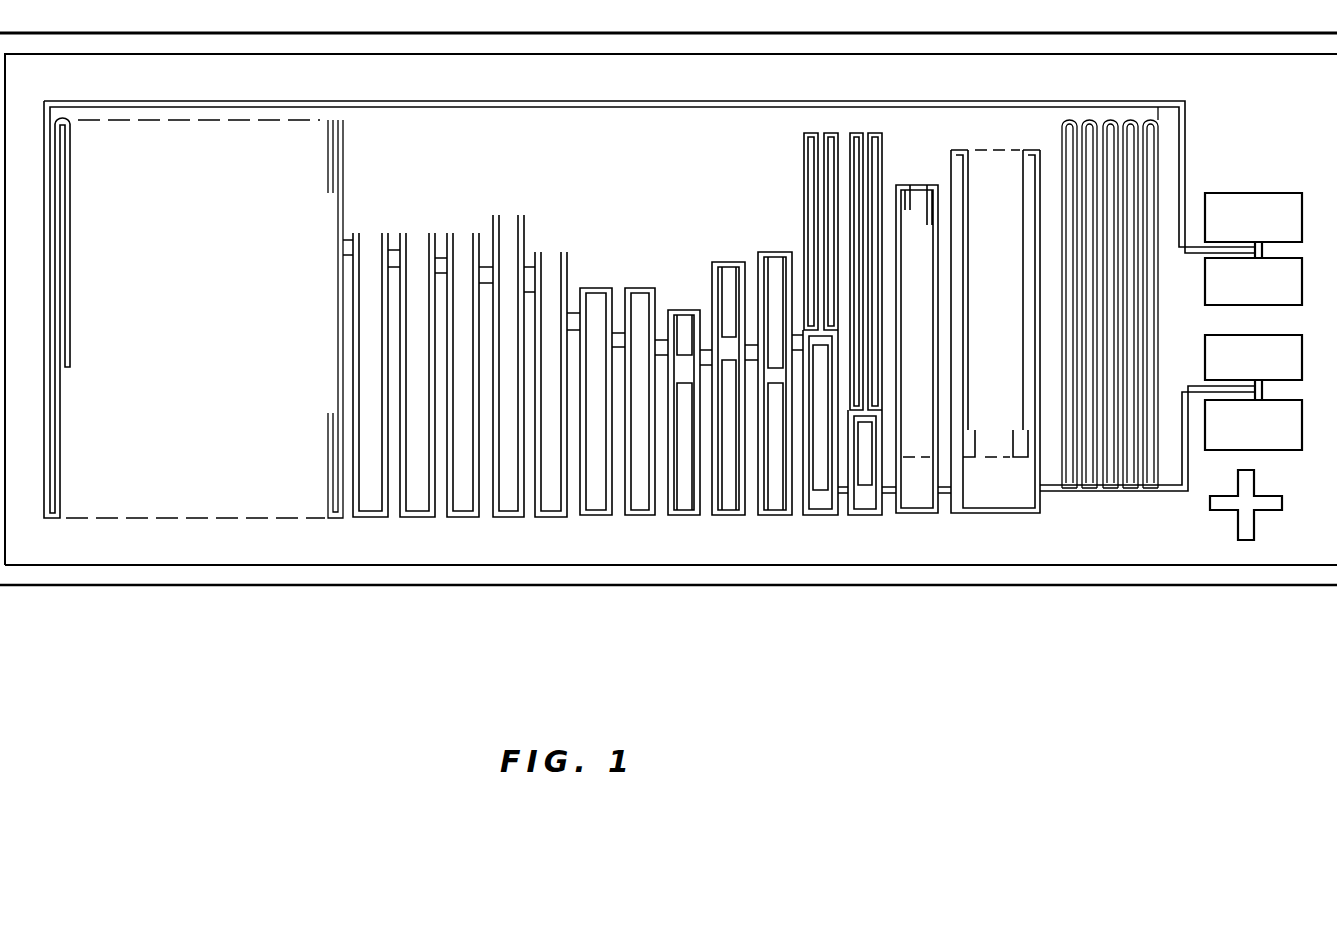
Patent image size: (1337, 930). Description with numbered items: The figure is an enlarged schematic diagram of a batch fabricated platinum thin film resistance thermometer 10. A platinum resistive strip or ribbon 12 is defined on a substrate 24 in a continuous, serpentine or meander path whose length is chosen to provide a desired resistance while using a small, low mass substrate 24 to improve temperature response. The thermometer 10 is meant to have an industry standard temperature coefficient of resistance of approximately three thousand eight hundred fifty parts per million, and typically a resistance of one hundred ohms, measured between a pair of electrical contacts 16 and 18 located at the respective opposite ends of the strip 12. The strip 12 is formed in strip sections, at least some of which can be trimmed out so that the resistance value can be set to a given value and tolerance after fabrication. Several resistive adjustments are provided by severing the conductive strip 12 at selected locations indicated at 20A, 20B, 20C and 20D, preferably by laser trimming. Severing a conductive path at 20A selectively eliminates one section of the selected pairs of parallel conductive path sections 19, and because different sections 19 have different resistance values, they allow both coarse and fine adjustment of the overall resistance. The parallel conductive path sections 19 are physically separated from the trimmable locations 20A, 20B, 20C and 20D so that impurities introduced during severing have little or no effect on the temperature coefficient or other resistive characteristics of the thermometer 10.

The platinum thin film resistance thermometer 10 is at (960, 584).
The platinum resistive strip 12 is at (50, 518).
The electrical contact 16 is at (1298, 218).
The electrical contact 18 is at (1280, 362).
The parallel conductive path sections 19 is at (425, 230).
The trimmable conductive path location 20A is at (378, 518).
The trimmable conductive path location 20B is at (418, 518).
The trimmable conductive path location 20C is at (462, 518).
The trimmable conductive path location 20D is at (508, 518).
The substrate 24 is at (285, 540).